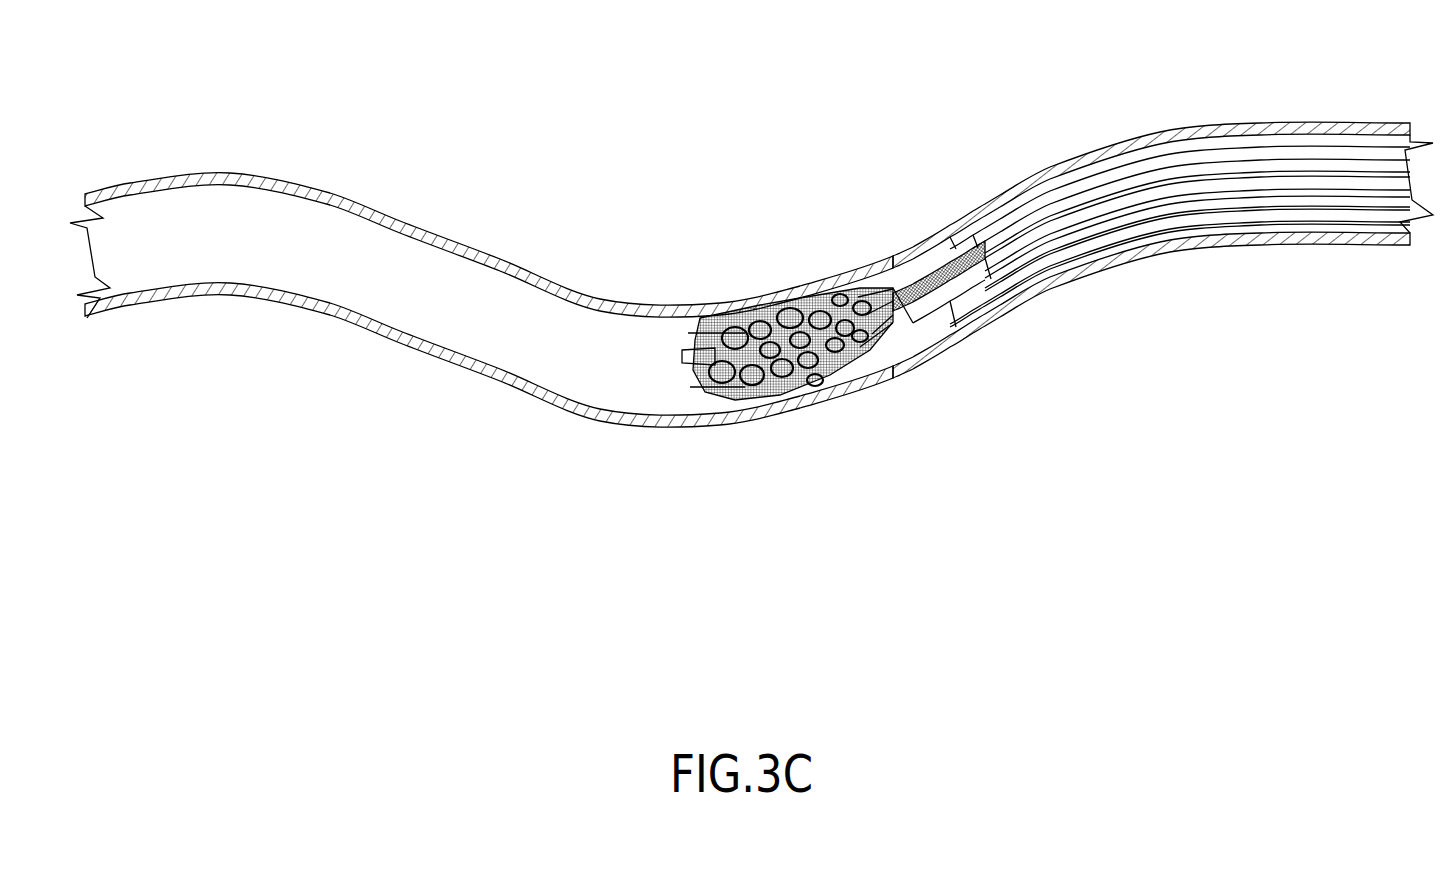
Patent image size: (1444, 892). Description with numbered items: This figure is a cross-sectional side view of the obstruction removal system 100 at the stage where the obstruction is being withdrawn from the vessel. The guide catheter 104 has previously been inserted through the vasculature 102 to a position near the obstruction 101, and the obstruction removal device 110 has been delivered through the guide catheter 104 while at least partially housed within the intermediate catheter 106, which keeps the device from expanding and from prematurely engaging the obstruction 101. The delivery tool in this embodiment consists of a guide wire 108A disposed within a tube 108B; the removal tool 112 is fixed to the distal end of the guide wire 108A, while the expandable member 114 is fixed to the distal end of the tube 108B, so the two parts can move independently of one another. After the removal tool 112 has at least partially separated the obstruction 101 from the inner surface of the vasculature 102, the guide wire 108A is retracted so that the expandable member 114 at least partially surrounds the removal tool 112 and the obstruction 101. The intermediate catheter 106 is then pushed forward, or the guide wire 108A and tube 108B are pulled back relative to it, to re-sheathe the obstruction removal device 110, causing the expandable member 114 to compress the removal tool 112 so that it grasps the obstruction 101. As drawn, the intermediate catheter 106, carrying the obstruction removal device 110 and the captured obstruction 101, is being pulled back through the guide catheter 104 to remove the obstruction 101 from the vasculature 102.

The obstruction removal system 100 is at (996, 138).
The obstruction 101 is at (697, 365).
The vasculature 102 is at (697, 302).
The guide catheter 104 is at (1310, 223).
The intermediate catheter 106 is at (1190, 212).
The guide wire 108A is at (1137, 190).
The tube 108B is at (1170, 177).
The obstruction removal device 110 is at (812, 383).
The removal tool 112 is at (890, 332).
The expandable member 114 is at (736, 392).